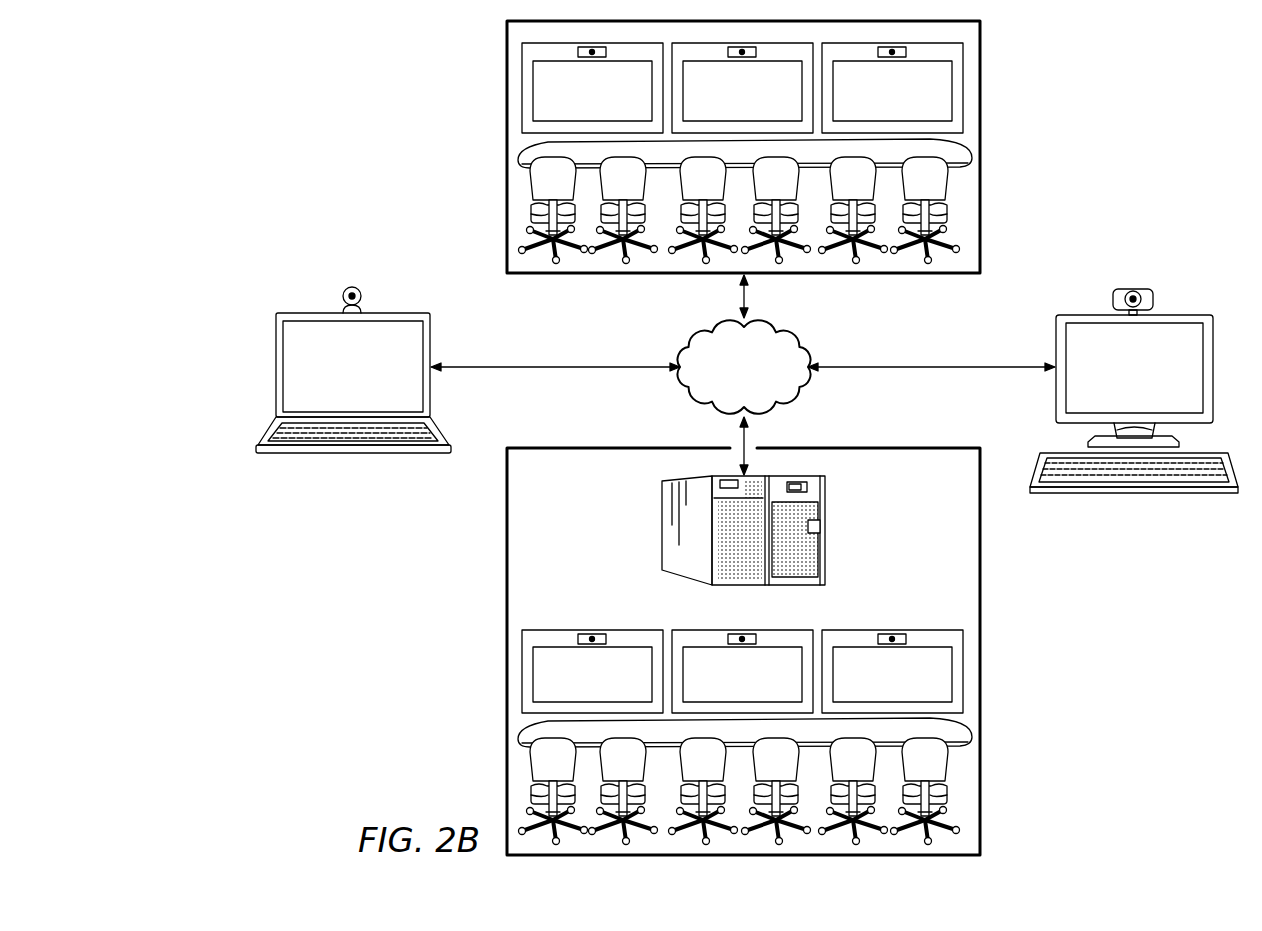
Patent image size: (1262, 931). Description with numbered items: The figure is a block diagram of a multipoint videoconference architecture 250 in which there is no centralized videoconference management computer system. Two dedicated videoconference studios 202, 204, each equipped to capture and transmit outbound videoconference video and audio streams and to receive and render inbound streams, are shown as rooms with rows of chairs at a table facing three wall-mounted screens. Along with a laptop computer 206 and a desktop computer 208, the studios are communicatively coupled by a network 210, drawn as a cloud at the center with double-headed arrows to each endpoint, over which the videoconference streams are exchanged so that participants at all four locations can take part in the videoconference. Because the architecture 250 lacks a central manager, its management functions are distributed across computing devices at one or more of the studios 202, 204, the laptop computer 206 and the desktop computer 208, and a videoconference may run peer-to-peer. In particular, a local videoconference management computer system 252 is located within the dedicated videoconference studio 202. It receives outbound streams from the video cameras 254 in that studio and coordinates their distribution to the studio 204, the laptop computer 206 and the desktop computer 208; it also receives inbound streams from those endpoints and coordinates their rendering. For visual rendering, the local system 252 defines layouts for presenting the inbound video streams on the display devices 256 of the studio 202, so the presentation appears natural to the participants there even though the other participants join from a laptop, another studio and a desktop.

The multipoint videoconference architecture 250 is at (384, 188).
The dedicated videoconference studio 202 is at (776, 651).
The dedicated videoconference studio 204 is at (980, 147).
The laptop computer 206 is at (322, 312).
The desktop computer 208 is at (1175, 313).
The network 210 is at (690, 336).
The local videoconference management computer system 252 is at (830, 527).
The video cameras 254 is at (578, 637).
The display devices 256 is at (624, 657).